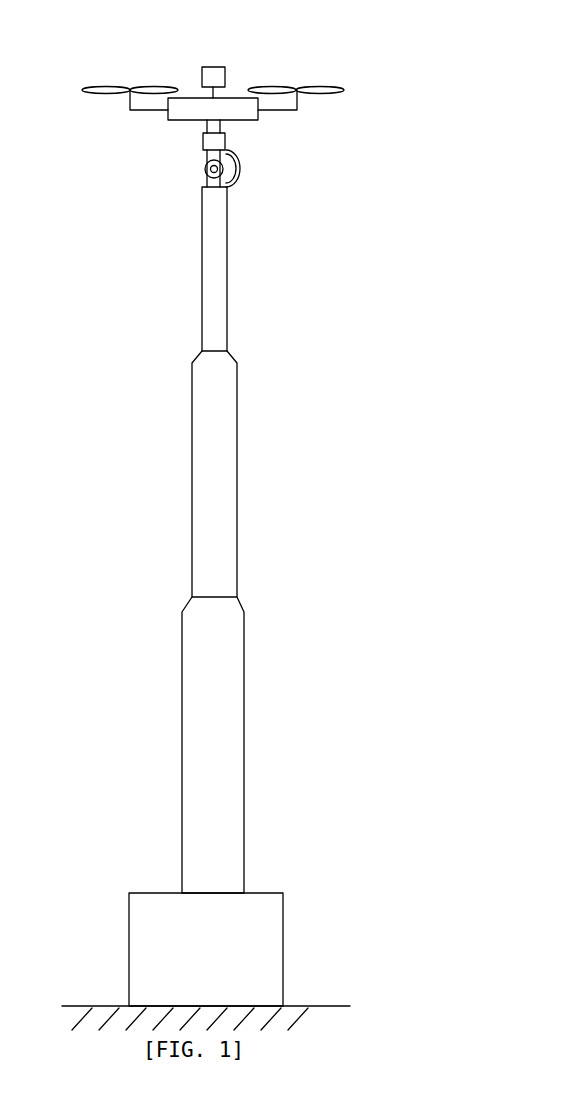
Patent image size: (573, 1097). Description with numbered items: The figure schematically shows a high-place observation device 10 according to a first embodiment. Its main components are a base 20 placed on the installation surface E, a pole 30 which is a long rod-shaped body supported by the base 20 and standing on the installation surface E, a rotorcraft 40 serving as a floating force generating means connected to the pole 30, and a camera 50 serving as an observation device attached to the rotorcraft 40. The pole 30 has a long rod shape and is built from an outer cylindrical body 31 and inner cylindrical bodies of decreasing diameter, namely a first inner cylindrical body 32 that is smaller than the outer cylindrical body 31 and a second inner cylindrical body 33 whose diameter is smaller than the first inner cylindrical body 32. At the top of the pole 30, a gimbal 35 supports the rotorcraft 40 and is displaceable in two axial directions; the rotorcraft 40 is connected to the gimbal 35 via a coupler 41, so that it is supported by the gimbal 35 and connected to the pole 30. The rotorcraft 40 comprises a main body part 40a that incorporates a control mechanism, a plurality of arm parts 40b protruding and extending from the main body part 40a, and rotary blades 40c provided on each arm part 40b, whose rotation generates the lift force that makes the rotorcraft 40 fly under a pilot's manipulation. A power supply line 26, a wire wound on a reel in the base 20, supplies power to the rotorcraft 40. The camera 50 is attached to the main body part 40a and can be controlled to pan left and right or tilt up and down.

The high-place observation device 10 is at (412, 179).
The base 20 is at (285, 922).
The pole 30 is at (254, 523).
The outer cylindrical body 31 is at (223, 683).
The first inner cylindrical body 32 is at (225, 408).
The second inner cylindrical body 33 is at (230, 255).
The gimbal 35 is at (205, 169).
The power supply line 26 is at (240, 170).
The rotorcraft 40 is at (252, 144).
The main body part 40a is at (168, 118).
The arm parts 40b is at (130, 102).
The rotary blades 40c is at (112, 89).
The coupler 41 is at (203, 137).
The camera 50 is at (217, 67).
The installation surface E is at (78, 1006).